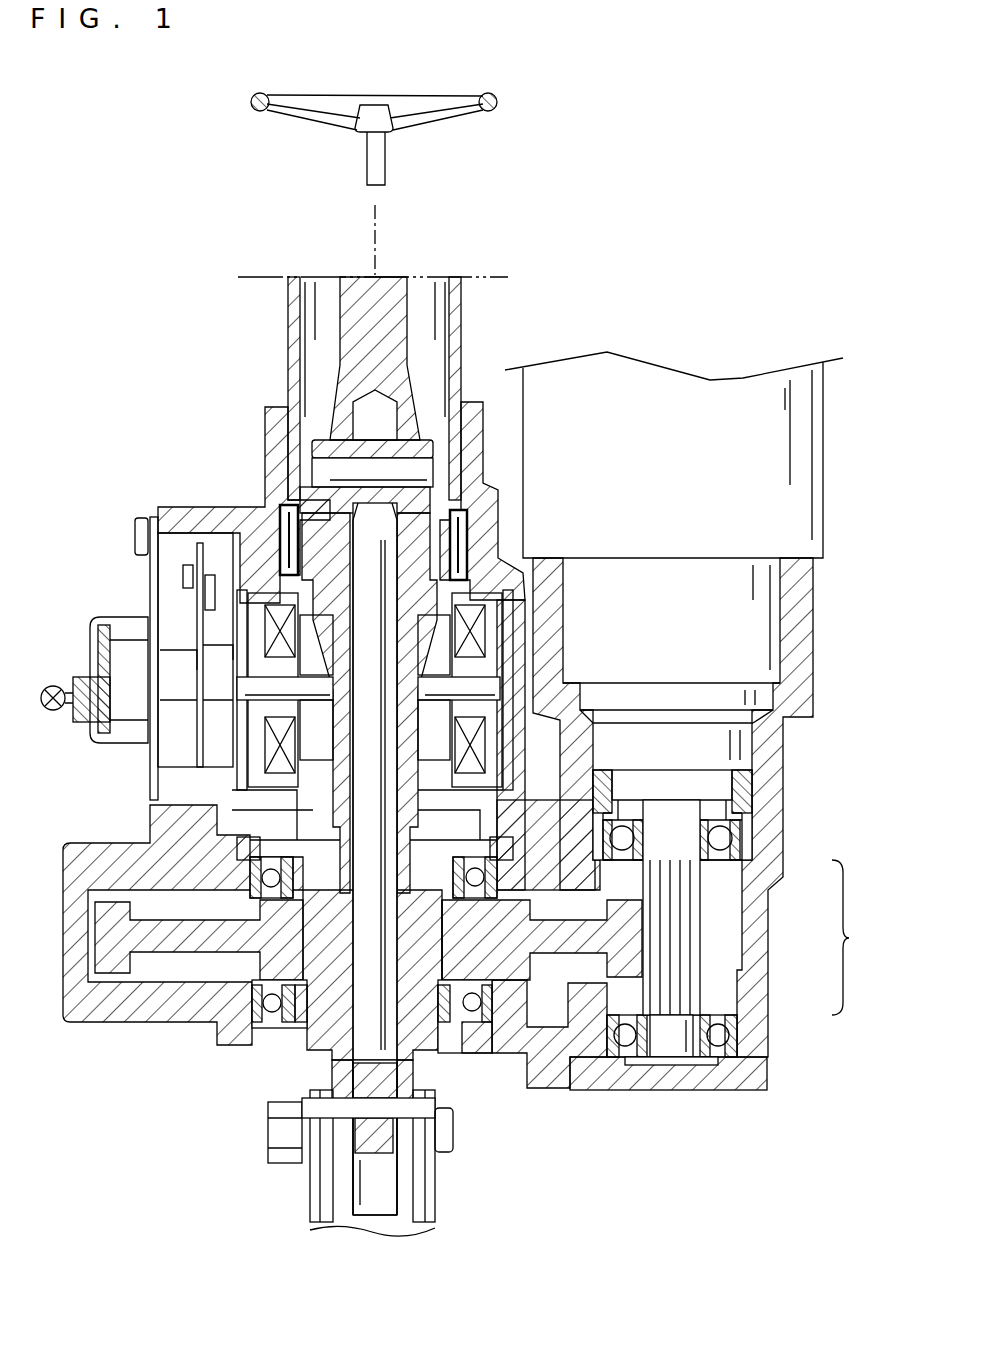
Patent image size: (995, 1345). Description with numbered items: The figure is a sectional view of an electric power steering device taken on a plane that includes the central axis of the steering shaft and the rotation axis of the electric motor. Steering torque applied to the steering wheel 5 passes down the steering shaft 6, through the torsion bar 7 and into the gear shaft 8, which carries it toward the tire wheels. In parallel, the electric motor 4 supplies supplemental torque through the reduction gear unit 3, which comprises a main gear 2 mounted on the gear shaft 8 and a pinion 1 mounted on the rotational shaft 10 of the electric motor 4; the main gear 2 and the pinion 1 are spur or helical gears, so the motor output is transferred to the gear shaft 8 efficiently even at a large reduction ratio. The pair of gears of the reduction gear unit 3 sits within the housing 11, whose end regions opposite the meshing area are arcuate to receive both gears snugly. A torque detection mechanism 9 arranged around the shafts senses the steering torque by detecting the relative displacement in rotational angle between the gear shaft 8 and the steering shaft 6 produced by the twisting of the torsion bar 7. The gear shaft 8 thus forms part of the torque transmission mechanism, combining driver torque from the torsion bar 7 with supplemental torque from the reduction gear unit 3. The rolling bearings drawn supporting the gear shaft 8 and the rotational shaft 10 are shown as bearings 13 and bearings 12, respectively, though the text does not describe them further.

The pinion 1 is at (690, 940).
The main gear 2 is at (100, 937).
The reduction gear unit 3 is at (853, 937).
The electric motor 4 is at (815, 458).
The steering wheel 5 is at (463, 100).
The steering shaft 6 is at (283, 512).
The torsion bar 7 is at (360, 580).
The gear shaft 8 is at (420, 1067).
The torque detection mechanism 9 is at (42, 533).
The rotational shaft 10 is at (665, 1065).
The housing 11 is at (752, 1080).
The ball bearing 12 is at (642, 817).
The ball bearing 13 is at (258, 873).